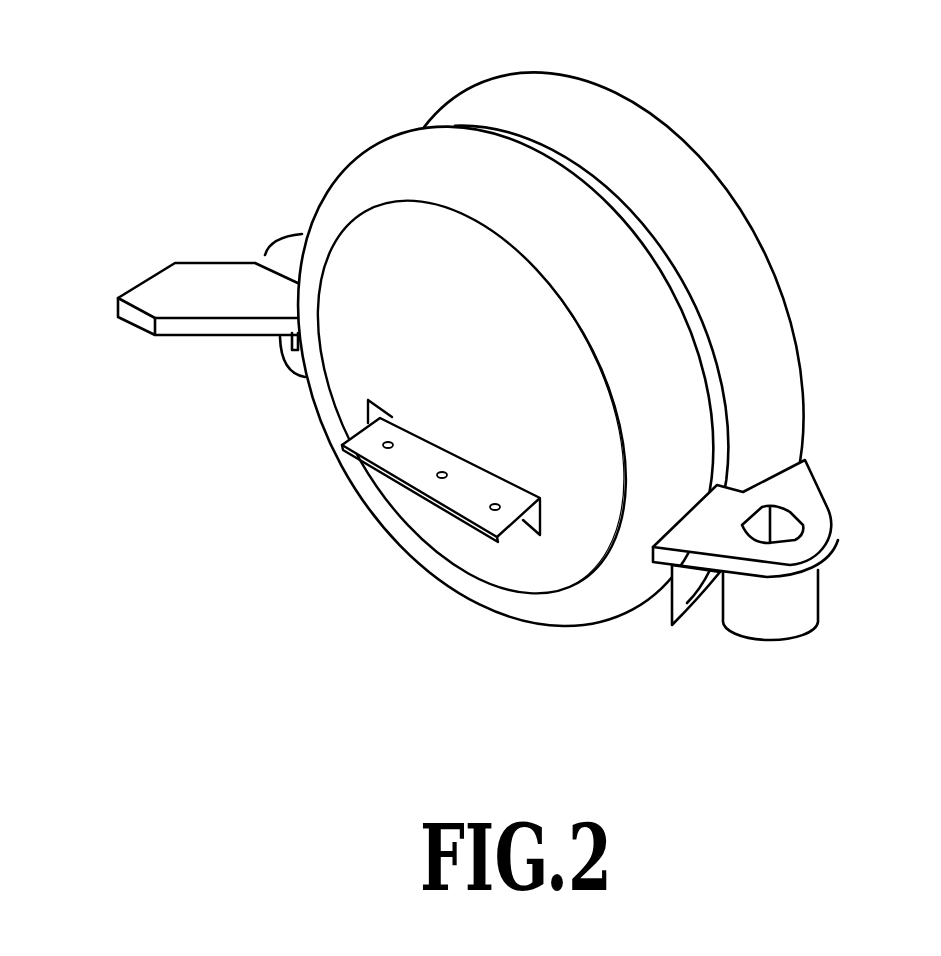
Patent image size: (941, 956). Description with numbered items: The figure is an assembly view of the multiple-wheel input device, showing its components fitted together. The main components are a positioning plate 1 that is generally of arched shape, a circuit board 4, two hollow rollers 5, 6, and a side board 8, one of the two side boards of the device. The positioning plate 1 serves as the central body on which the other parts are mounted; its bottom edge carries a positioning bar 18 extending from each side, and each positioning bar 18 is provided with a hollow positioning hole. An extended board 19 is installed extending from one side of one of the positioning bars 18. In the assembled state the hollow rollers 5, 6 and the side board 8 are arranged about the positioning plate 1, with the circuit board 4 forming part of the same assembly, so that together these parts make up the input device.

The positioning plate 1 is at (521, 349).
The circuit board 4 is at (408, 468).
The hollow roller 5 is at (695, 195).
The hollow roller 6 is at (402, 160).
The side board 8 is at (340, 368).
The positioning bar 18 is at (803, 503).
The extended board 19 is at (198, 302).